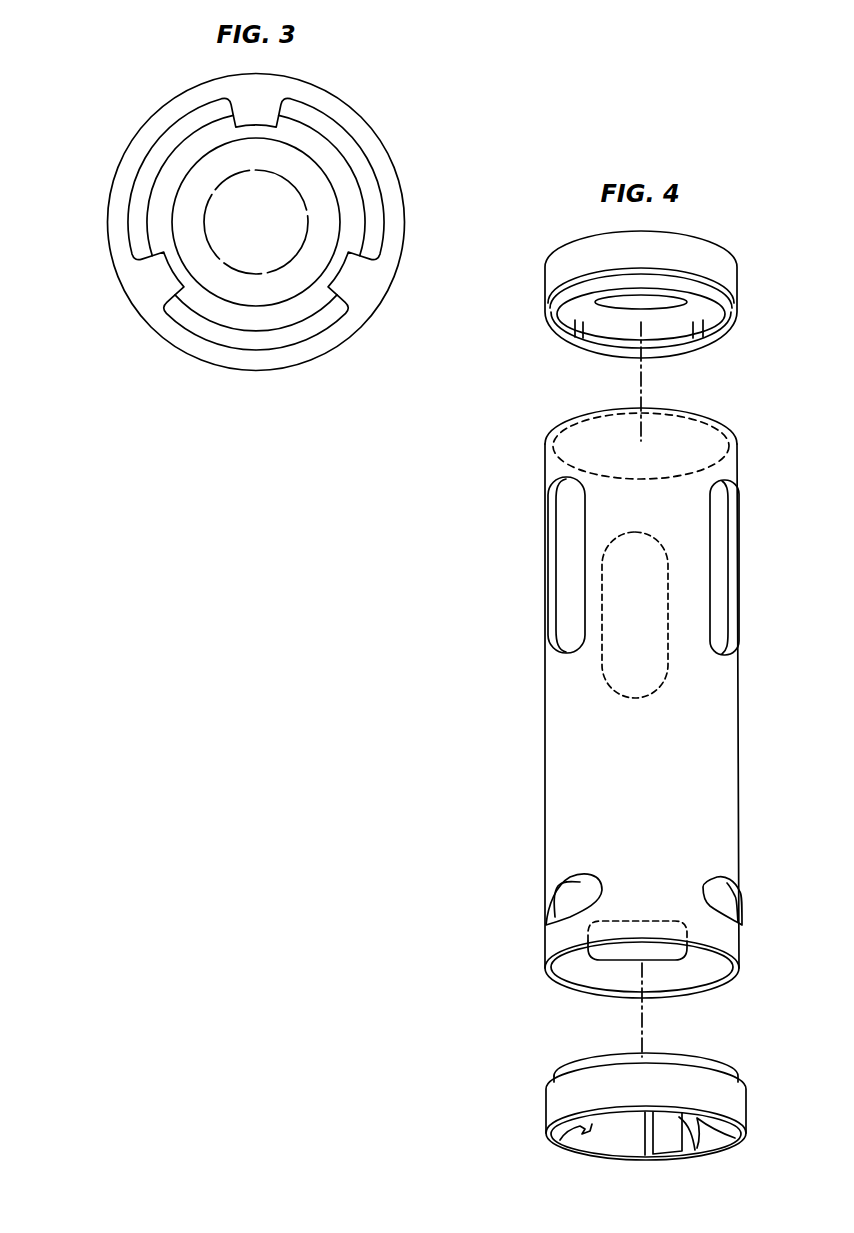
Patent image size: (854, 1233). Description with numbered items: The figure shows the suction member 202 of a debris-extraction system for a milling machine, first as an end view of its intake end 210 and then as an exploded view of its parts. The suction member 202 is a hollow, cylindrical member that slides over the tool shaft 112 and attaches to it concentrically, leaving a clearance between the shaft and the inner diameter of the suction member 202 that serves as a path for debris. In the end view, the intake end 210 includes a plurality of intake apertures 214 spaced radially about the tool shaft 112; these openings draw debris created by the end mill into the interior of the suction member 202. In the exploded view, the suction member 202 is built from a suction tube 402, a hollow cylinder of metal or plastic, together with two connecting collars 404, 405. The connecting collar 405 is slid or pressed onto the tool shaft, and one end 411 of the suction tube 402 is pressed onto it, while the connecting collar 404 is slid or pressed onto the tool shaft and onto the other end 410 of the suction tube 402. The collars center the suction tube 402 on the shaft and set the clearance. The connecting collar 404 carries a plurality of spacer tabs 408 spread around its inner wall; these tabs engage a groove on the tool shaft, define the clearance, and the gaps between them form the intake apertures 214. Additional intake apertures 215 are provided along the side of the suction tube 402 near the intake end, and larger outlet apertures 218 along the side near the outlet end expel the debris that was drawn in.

In FIG. 3, the tool shaft 112 is at (333, 198).
In FIG. 3, the intake end 210 is at (163, 104).
In FIG. 3, the intake apertures 214 is at (354, 150).
In FIG. 4, the intake apertures 214 is at (562, 1158).
In FIG. 4, the suction member 202 is at (449, 969).
In FIG. 4, the additional intake apertures 215 is at (583, 893).
In FIG. 4, the outlet apertures 218 is at (565, 590).
In FIG. 4, the suction tube 402 is at (711, 742).
In FIG. 4, the connecting collar 404 is at (737, 1104).
In FIG. 4, the connecting collar 405 is at (724, 270).
In FIG. 4, the spacer tabs 408 is at (562, 1141).
In FIG. 4, the other end of suction tube 410 is at (736, 1002).
In FIG. 4, the one end of suction tube 411 is at (729, 405).